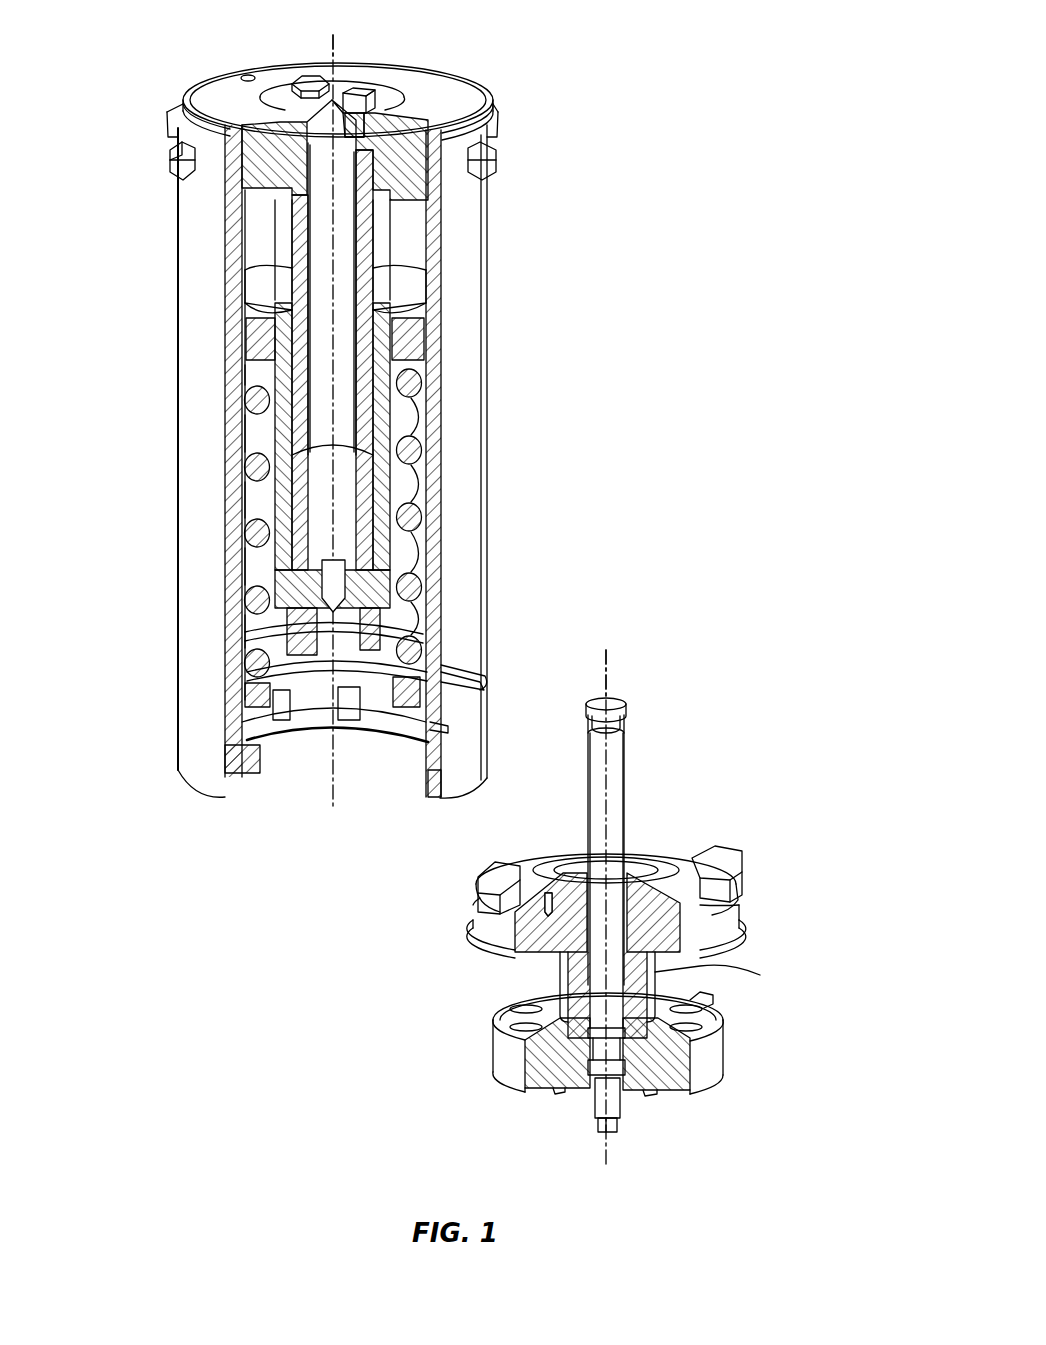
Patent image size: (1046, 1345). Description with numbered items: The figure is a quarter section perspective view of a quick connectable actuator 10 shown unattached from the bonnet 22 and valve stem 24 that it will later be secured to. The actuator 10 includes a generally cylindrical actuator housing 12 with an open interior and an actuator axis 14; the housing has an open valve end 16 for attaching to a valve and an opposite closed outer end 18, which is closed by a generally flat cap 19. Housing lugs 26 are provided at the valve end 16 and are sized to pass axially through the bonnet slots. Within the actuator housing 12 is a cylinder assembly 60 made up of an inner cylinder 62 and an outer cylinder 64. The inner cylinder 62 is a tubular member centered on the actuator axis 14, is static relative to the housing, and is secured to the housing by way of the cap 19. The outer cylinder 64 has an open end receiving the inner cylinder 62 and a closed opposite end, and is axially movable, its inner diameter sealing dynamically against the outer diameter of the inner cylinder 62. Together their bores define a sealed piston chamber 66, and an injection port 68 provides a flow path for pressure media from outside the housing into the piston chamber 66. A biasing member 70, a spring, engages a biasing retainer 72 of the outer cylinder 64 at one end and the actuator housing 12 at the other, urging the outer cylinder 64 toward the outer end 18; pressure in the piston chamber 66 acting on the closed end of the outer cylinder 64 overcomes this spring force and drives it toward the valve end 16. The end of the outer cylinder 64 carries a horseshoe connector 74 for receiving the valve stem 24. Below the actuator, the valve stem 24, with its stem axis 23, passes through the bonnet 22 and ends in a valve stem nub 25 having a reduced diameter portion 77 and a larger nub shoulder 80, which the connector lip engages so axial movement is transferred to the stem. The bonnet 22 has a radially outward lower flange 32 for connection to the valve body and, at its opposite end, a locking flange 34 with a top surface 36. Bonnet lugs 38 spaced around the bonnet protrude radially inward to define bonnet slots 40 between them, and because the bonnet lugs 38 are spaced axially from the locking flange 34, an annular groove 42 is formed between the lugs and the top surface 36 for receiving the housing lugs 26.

The actuator 10 is at (740, 52).
The actuator housing 12 is at (192, 394).
The actuator axis 14 is at (330, 52).
The valve end 16 is at (160, 652).
The outer end 18 is at (458, 52).
The cap 19 is at (222, 90).
The bonnet 22 is at (662, 966).
The stem axis 23 is at (604, 681).
The valve stem 24 is at (618, 776).
The valve stem nub 25 is at (650, 700).
The housing lugs 26 is at (348, 706).
The lower flange 32 is at (500, 1053).
The locking flange 34 is at (730, 946).
The top surface 36 is at (496, 940).
The bonnet lugs 38 is at (478, 888).
The bonnet slots 40 is at (712, 870).
The groove 42 is at (470, 918).
The cylinder assembly 60 is at (402, 232).
The inner cylinder 62 is at (298, 242).
The outer cylinder 64 is at (276, 492).
The piston chamber 66 is at (343, 373).
The injection port 68 is at (362, 92).
The biasing member 70 is at (396, 516).
The biasing retainer 72 is at (396, 330).
The horseshoe connector 74 is at (314, 660).
The reduced diameter portion 77 is at (626, 718).
The nub shoulder 80 is at (590, 720).